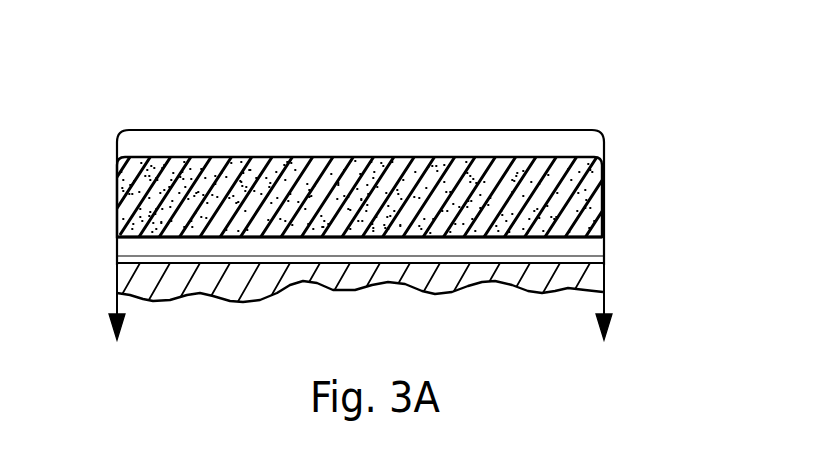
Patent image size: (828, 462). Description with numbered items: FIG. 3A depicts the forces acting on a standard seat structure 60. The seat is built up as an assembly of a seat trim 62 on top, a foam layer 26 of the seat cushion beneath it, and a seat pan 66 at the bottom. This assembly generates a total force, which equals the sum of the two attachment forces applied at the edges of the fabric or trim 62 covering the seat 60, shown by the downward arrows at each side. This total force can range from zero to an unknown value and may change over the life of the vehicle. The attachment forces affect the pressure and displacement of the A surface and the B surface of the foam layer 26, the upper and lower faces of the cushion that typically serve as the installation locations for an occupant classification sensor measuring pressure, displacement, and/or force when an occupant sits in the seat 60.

The seat structure 60 is at (162, 113).
The seat trim 62 is at (490, 129).
The foam layer 26 is at (380, 168).
The A surface A is at (560, 156).
The B surface B is at (556, 238).
The seat pan 66 is at (191, 265).